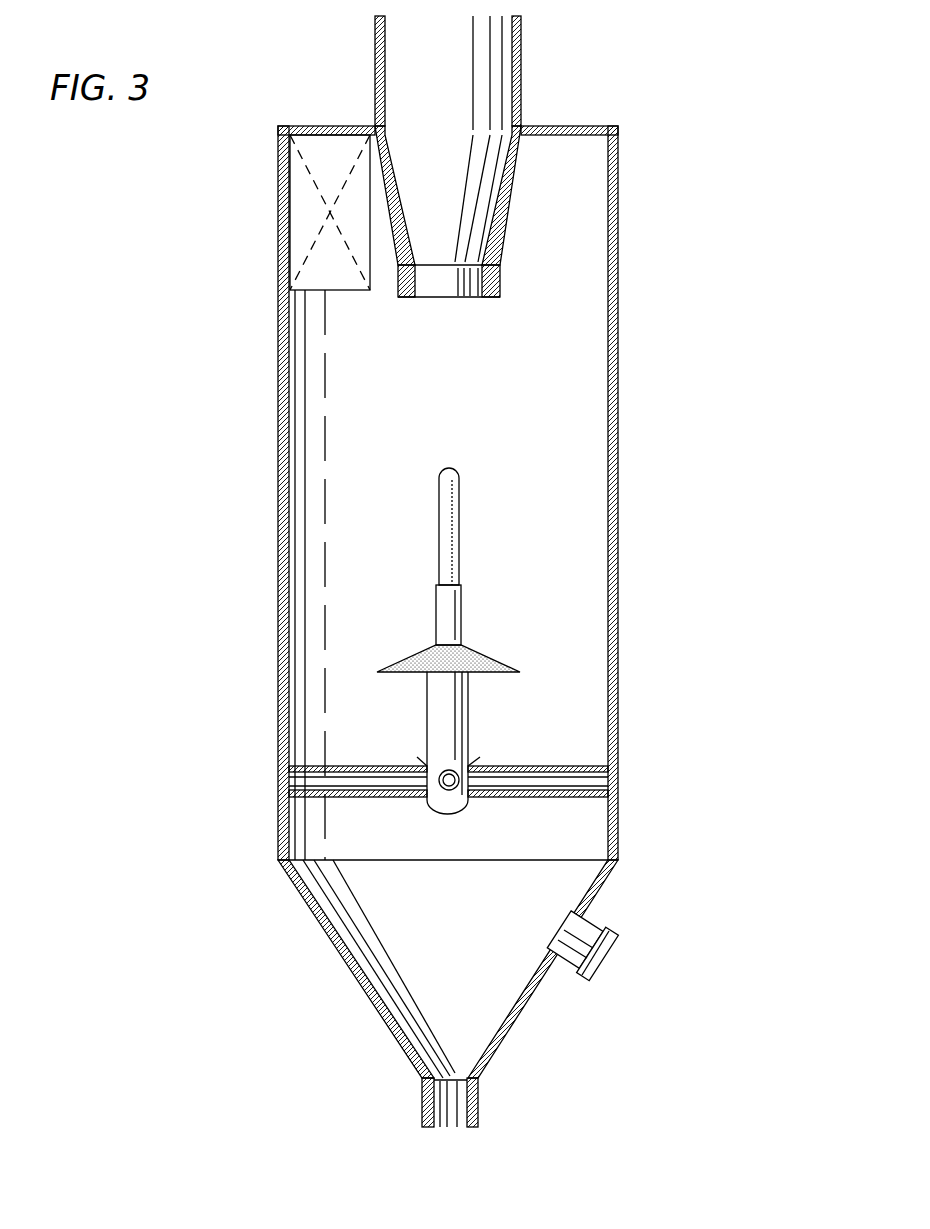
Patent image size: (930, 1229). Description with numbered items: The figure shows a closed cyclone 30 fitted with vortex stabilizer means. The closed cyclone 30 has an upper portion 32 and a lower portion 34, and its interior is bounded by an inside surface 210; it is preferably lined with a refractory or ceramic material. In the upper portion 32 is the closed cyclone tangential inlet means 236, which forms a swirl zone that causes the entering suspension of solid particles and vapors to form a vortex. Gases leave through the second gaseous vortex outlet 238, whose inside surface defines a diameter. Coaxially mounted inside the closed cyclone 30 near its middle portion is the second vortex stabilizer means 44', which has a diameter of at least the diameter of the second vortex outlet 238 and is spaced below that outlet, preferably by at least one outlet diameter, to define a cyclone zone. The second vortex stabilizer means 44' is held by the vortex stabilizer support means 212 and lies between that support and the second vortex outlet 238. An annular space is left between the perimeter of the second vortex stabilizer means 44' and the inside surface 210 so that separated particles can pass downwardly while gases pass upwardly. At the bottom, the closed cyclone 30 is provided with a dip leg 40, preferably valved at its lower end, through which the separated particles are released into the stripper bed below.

The closed cyclone 30 is at (634, 221).
The upper portion 32 is at (278, 358).
The lower portion 34 is at (278, 812).
The dip leg 40 is at (422, 1100).
The second vortex stabilizer means 44' is at (452, 641).
The inside surface 210 is at (290, 415).
The vortex stabilizer support means 212 is at (597, 783).
The closed cyclone tangential inlet means 236 is at (302, 203).
The second gaseous vortex outlet 238 is at (430, 135).